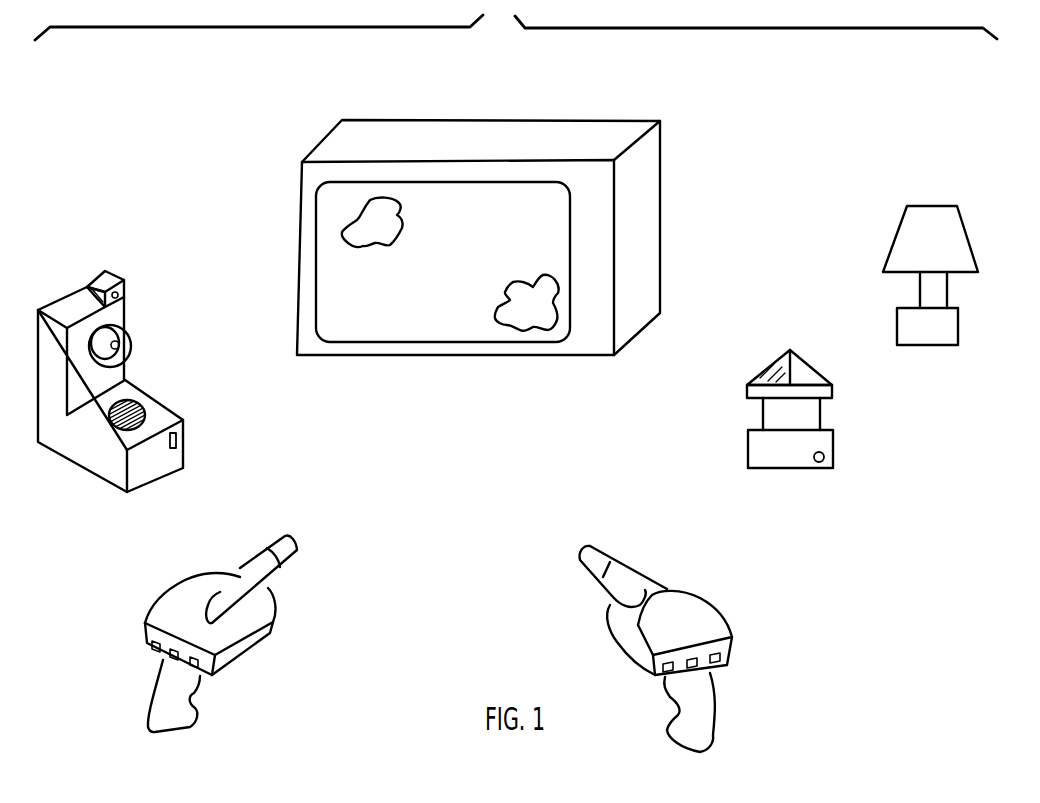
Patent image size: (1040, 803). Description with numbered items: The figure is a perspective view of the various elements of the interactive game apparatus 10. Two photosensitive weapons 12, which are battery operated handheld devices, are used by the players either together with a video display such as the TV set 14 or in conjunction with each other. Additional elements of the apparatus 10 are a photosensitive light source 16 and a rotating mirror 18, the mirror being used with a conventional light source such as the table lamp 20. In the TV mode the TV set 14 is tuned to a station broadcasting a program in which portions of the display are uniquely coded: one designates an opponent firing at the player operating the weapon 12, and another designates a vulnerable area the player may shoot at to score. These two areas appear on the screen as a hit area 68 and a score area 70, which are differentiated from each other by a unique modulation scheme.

The interactive game apparatus 10 is at (438, 669).
The photosensitive weapon 12 is at (238, 625).
The TV set 14 is at (650, 203).
The photosensitive light source 16 is at (117, 312).
The rotating mirror 18 is at (827, 438).
The table lamp 20 is at (952, 317).
The hit area 68 is at (343, 215).
The score area 70 is at (535, 293).